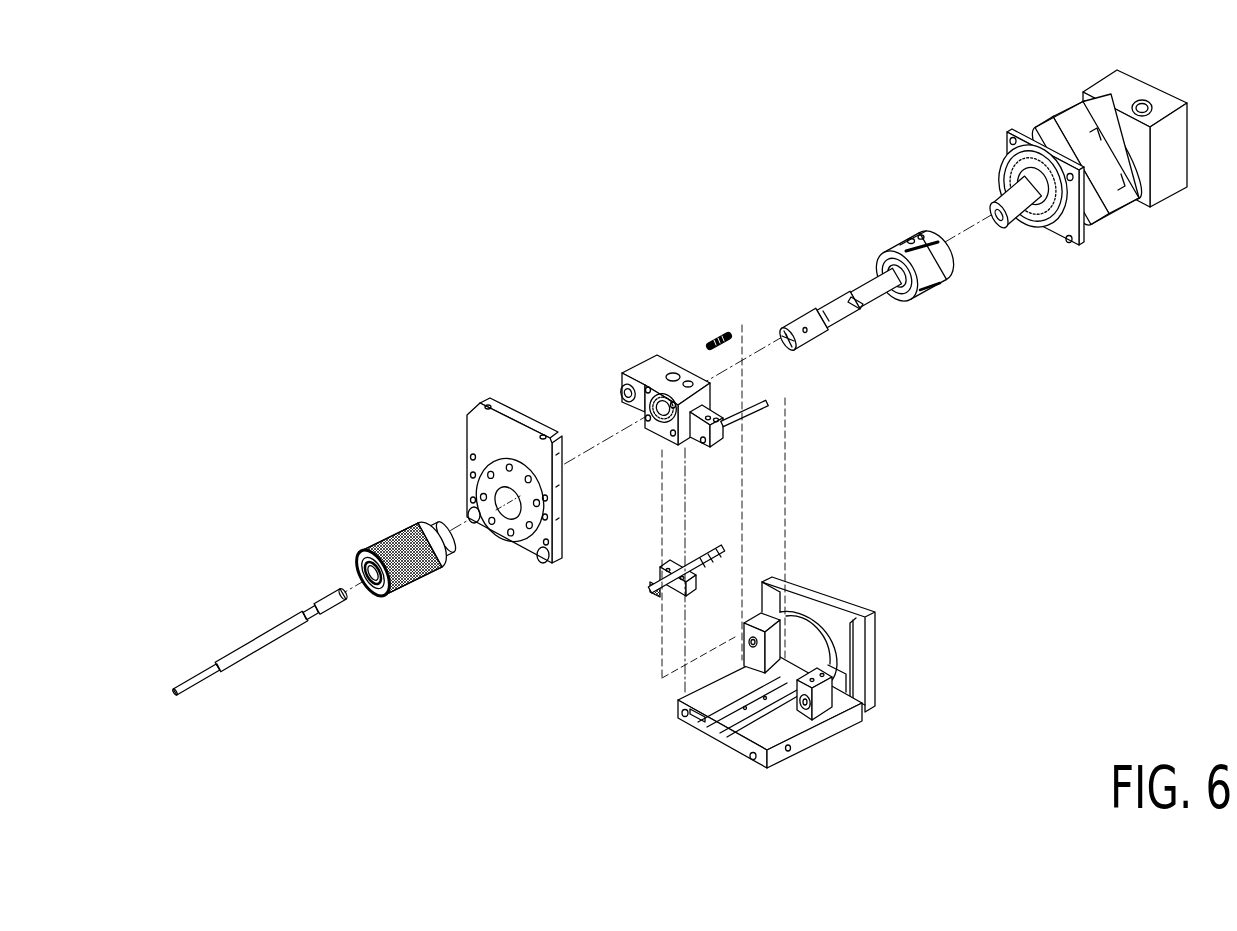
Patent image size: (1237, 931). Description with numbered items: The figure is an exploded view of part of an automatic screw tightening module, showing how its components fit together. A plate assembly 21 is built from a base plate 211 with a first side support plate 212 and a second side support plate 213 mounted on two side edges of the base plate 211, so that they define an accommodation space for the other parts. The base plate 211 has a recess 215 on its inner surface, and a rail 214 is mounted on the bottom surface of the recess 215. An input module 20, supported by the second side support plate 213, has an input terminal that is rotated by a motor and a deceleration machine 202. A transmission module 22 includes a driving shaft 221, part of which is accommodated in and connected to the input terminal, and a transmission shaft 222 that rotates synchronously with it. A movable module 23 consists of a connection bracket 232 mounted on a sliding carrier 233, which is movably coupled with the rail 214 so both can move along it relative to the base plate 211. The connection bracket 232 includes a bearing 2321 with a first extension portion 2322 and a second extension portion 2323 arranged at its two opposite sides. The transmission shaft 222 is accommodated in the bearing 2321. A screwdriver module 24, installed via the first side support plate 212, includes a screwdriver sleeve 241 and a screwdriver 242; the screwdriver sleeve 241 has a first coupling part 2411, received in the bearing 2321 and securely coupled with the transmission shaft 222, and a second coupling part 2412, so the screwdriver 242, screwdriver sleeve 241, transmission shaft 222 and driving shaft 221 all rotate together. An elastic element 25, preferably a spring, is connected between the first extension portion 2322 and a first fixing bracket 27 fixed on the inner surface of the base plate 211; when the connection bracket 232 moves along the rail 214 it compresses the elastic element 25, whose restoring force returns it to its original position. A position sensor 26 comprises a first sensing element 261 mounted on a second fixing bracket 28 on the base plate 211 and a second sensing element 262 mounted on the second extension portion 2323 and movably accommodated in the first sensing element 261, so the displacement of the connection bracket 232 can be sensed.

The input module 20 is at (1082, 149).
The deceleration machine 202 is at (1075, 108).
The transmission module 22 is at (881, 238).
The driving shaft 221 is at (985, 207).
The transmission shaft 222 is at (839, 263).
The elastic element 25 is at (716, 333).
The movable module 23 is at (641, 453).
The connection bracket 232 is at (641, 408).
The bearing 2321 is at (638, 415).
The first extension portion 2322 is at (640, 377).
The second extension portion 2323 is at (718, 437).
The sliding carrier 233 is at (665, 571).
The position sensor 26 is at (816, 545).
The first sensing element 261 is at (847, 623).
The second sensing element 262 is at (750, 420).
The first fixing bracket 27 is at (763, 618).
The second fixing bracket 28 is at (817, 707).
The plate assembly 21 is at (671, 605).
The base plate 211 is at (760, 766).
The first side support plate 212 is at (520, 536).
The second side support plate 213 is at (858, 712).
The rail 214 is at (665, 595).
The recess 215 is at (705, 739).
The screwdriver module 24 is at (324, 565).
The screwdriver sleeve 241 is at (398, 575).
The first coupling part 2411 is at (452, 575).
The second coupling part 2412 is at (379, 605).
The screwdriver 242 is at (278, 623).